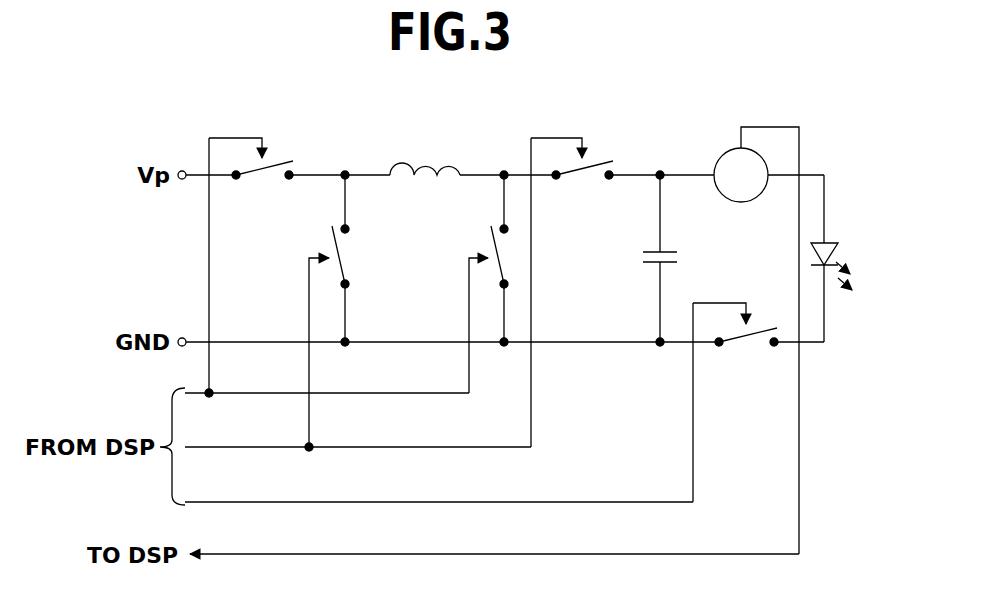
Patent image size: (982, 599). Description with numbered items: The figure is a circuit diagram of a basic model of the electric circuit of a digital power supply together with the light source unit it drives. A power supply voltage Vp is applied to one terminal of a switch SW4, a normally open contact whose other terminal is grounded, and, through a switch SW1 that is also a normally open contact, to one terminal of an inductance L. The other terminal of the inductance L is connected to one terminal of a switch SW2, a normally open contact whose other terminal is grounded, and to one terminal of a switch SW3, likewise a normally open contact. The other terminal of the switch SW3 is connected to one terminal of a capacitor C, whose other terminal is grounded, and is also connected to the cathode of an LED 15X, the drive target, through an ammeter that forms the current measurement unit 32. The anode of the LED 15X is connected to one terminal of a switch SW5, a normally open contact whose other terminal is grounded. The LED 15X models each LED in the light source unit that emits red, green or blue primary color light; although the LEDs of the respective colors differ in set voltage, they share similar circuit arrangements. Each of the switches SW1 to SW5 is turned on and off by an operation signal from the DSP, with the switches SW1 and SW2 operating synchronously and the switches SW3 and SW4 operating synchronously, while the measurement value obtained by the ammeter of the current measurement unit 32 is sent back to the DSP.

The current measurement unit 32 is at (741, 203).
The LED 15X is at (828, 243).
The inductance L is at (439, 163).
The capacitor C is at (656, 252).
The switch SW1 is at (251, 265).
The switch SW2 is at (474, 282).
The switch SW3 is at (572, 292).
The switch SW4 is at (353, 309).
The switch SW5 is at (735, 402).